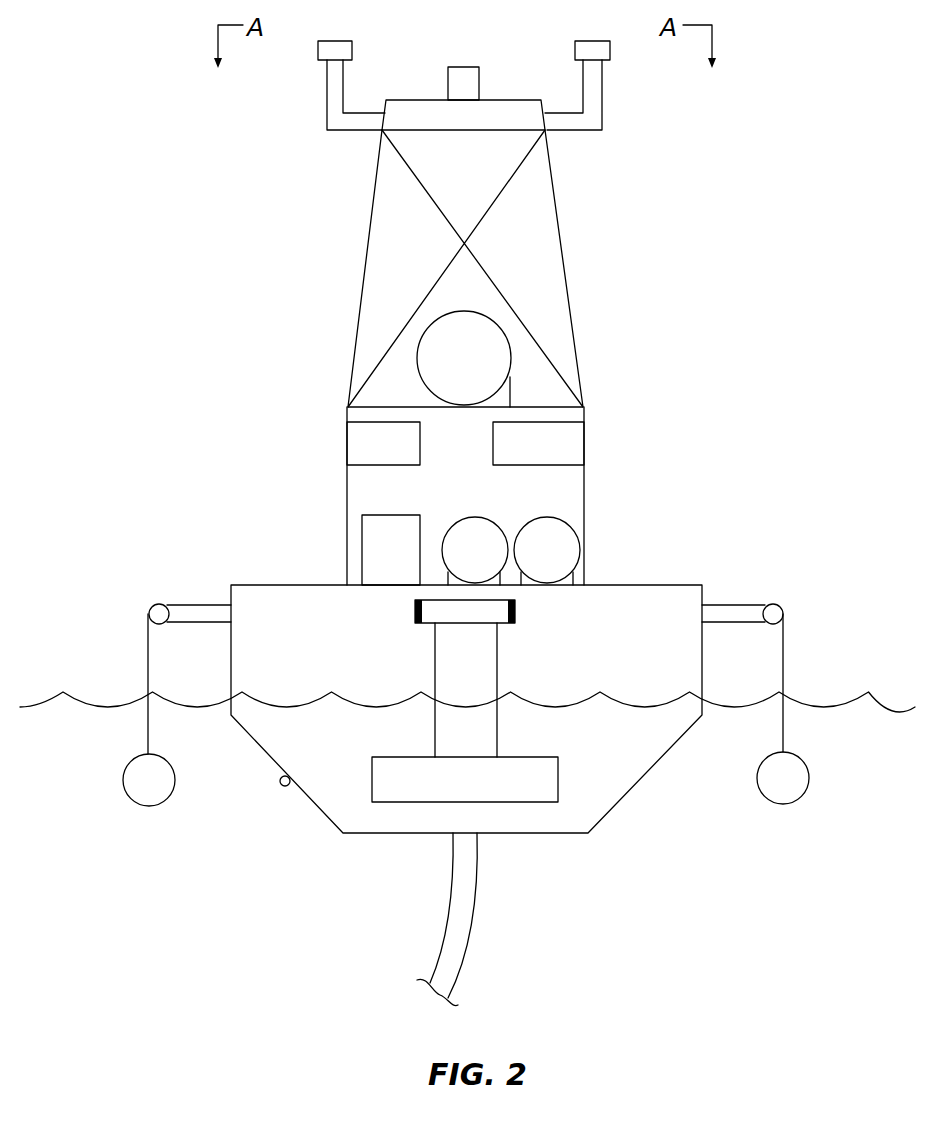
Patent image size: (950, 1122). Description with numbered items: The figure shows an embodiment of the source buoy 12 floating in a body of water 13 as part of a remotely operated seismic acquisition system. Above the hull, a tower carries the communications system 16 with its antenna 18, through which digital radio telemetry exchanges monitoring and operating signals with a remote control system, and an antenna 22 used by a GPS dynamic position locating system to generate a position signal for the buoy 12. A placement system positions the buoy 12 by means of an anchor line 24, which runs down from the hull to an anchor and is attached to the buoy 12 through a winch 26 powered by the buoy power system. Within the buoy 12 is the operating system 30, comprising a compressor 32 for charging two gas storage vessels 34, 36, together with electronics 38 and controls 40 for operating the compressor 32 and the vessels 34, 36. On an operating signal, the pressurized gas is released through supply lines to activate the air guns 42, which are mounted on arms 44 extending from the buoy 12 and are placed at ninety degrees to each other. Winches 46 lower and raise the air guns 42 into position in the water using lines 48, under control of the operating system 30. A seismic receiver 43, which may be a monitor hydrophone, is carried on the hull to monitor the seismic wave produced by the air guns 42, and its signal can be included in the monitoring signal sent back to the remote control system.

The buoy 12 is at (728, 176).
The body of water 13 is at (690, 909).
The communications system 16 is at (637, 426).
The antenna 18 is at (610, 50).
The antenna 22 is at (318, 50).
The anchor line 24 is at (470, 920).
The winch 26 is at (513, 358).
The operating system 30 is at (281, 431).
The compressor 32 is at (380, 515).
The gas storage vessel 34 is at (472, 518).
The gas storage vessel 36 is at (580, 547).
The electronics 38 is at (362, 421).
The controls 40 is at (563, 465).
The air gun 42 is at (123, 780).
The seismic receiver 43 is at (280, 783).
The arm 44 is at (196, 603).
The winch 46 is at (147, 612).
The line 48 is at (148, 660).